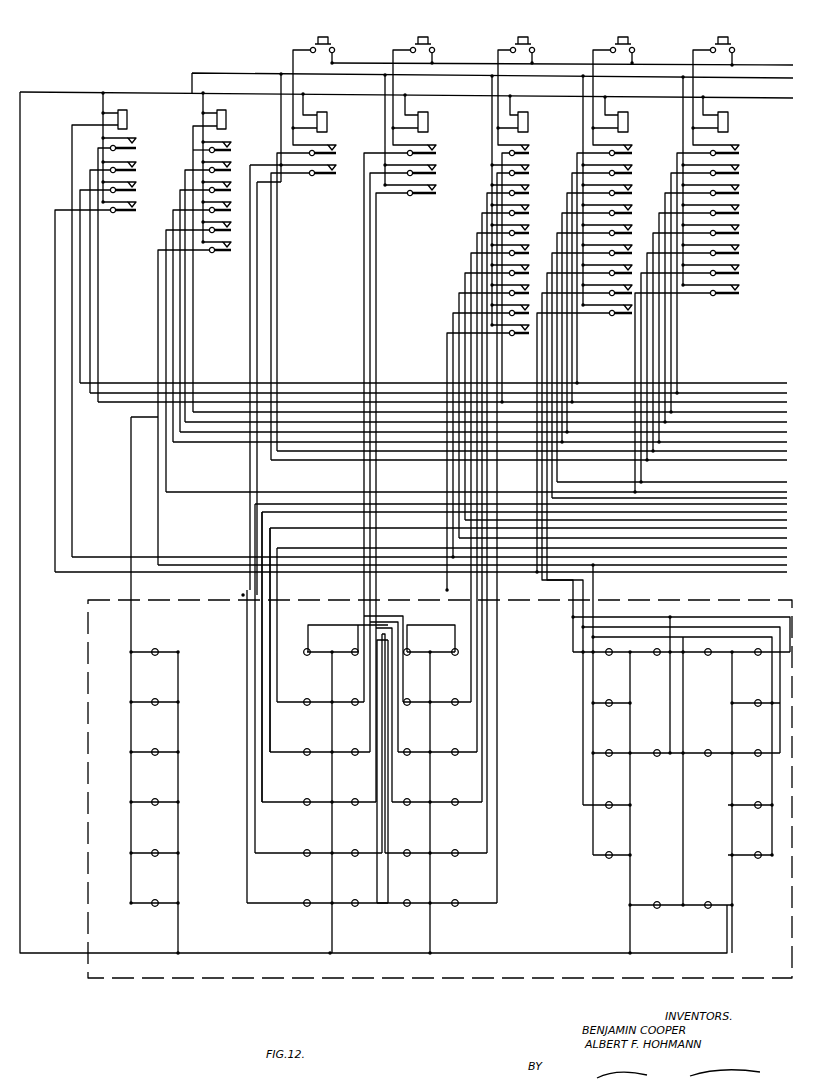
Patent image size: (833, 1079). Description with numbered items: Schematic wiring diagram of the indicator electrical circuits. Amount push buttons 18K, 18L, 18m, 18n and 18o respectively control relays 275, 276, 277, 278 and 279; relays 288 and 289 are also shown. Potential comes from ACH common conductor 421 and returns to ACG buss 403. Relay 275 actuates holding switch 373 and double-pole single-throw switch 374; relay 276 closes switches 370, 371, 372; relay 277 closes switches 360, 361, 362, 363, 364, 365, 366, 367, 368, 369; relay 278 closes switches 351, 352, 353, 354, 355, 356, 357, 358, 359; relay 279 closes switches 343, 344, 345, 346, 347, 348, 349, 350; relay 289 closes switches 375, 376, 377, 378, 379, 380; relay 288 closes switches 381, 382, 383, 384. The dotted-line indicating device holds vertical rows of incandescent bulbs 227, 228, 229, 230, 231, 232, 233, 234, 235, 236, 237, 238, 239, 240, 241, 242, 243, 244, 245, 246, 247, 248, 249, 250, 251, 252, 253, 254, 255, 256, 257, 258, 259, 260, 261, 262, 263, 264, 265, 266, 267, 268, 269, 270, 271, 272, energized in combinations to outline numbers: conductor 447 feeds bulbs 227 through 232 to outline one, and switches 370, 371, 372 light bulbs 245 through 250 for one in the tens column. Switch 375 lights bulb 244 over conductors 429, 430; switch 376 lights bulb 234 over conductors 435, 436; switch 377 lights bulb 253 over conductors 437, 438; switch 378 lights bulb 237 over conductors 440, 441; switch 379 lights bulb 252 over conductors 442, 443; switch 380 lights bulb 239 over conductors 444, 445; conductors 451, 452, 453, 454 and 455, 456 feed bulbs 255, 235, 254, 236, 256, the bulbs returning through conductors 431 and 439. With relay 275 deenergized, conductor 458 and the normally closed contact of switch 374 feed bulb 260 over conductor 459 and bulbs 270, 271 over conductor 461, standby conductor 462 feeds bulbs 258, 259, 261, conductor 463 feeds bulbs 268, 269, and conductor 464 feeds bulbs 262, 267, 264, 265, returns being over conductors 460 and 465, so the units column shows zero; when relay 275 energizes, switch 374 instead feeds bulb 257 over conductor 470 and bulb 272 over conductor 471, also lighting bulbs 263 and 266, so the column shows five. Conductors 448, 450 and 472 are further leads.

The amount push button 18K is at (319, 32).
The amount push button 18L is at (417, 31).
The amount push button 18m is at (517, 29).
The amount push button 18n is at (623, 30).
The amount push button 18o is at (725, 30).
The incandescent bulb 227 is at (162, 648).
The incandescent bulb 228 is at (156, 698).
The incandescent bulb 229 is at (156, 748).
The incandescent bulb 230 is at (156, 798).
The incandescent bulb 231 is at (156, 849).
The incandescent bulb 232 is at (156, 899).
The incandescent bulb 233 is at (319, 644).
The incandescent bulb 234 is at (318, 700).
The incandescent bulb 235 is at (308, 750).
The incandescent bulb 236 is at (308, 800).
The incandescent bulb 237 is at (305, 850).
The incandescent bulb 238 is at (305, 899).
The incandescent bulb 239 is at (355, 899).
The incandescent bulb 240 is at (355, 849).
The incandescent bulb 241 is at (355, 799).
The incandescent bulb 242 is at (355, 749).
The incandescent bulb 243 is at (355, 699).
The incandescent bulb 244 is at (347, 662).
The incandescent bulb 245 is at (413, 662).
The incandescent bulb 246 is at (413, 692).
The incandescent bulb 247 is at (410, 748).
The incandescent bulb 248 is at (408, 798).
The incandescent bulb 249 is at (408, 850).
The incandescent bulb 250 is at (412, 892).
The incandescent bulb 251 is at (456, 899).
The incandescent bulb 252 is at (456, 850).
The incandescent bulb 253 is at (456, 798).
The incandescent bulb 254 is at (455, 748).
The incandescent bulb 255 is at (455, 698).
The incandescent bulb 256 is at (456, 654).
The incandescent bulb 257 is at (618, 669).
The incandescent bulb 258 is at (609, 707).
The incandescent bulb 259 is at (609, 757).
The incandescent bulb 260 is at (609, 809).
The incandescent bulb 261 is at (609, 859).
The incandescent bulb 262 is at (662, 900).
The incandescent bulb 263 is at (657, 757).
The incandescent bulb 264 is at (648, 663).
The incandescent bulb 265 is at (708, 656).
The incandescent bulb 266 is at (716, 744).
The incandescent bulb 267 is at (708, 900).
The incandescent bulb 268 is at (758, 859).
The incandescent bulb 269 is at (749, 816).
The incandescent bulb 270 is at (758, 757).
The incandescent bulb 271 is at (749, 712).
The incandescent bulb 272 is at (749, 663).
The relay 275 is at (329, 118).
The relay 276 is at (429, 118).
The relay 277 is at (528, 120).
The relay 278 is at (628, 120).
The relay 279 is at (728, 120).
The relay 288 is at (128, 116).
The relay 289 is at (226, 118).
The normally open switch 343 is at (740, 145).
The normally open switch 344 is at (741, 168).
The normally open switch 345 is at (741, 189).
The normally open switch 346 is at (741, 209).
The normally open switch 347 is at (741, 229).
The normally open switch 348 is at (741, 248).
The normally open switch 349 is at (741, 268).
The normally open switch 350 is at (741, 288).
The normally open switch 351 is at (632, 145).
The normally open switch 352 is at (634, 164).
The normally open switch 353 is at (634, 184).
The normally open switch 354 is at (634, 204).
The normally open switch 355 is at (634, 224).
The normally open switch 356 is at (632, 244).
The normally open switch 357 is at (632, 265).
The normally open switch 358 is at (638, 296).
The normally open switch 359 is at (630, 316).
The normally open switch 360 is at (530, 143).
The normally open switch 361 is at (540, 161).
The normally open switch 362 is at (530, 184).
The normally open switch 363 is at (530, 204).
The normally open switch 364 is at (530, 225).
The normally open switch 365 is at (530, 246).
The normally open switch 366 is at (530, 268).
The normally open switch 367 is at (530, 288).
The normally open switch 368 is at (532, 312).
The normally open switch 369 is at (528, 330).
The normally open switch 370 is at (438, 149).
The normally open switch 371 is at (438, 168).
The normally open switch 372 is at (438, 189).
The normally open switch 373 is at (338, 149).
The double-pole single-throw switch 374 is at (338, 169).
The normally open switch 375 is at (240, 136).
The normally open switch 376 is at (242, 164).
The normally open switch 377 is at (246, 187).
The normally open switch 378 is at (246, 208).
The normally open switch 379 is at (246, 228).
The normally open switch 380 is at (246, 248).
The normally open switch 381 is at (138, 138).
The normally open switch 382 is at (140, 162).
The normally open switch 383 is at (136, 182).
The normally open switch 384 is at (138, 207).
The ACG buss 403 is at (220, 952).
The ACH common conductor 421 is at (268, 78).
The conductor 429 is at (194, 316).
The conductor 430 is at (350, 466).
The conductor 431 is at (328, 668).
The conductor 435 is at (177, 170).
The conductor 436 is at (297, 477).
The conductor 437 is at (156, 212).
The conductor 438 is at (501, 618).
The conductor 439 is at (467, 710).
The conductor 440 is at (154, 230).
The conductor 441 is at (246, 648).
The conductor 442 is at (142, 250).
The conductor 443 is at (501, 653).
The conductor 444 is at (146, 286).
The conductor 445 is at (408, 634).
The conductor 447 is at (136, 622).
The conductor 448 is at (180, 782).
The conductor 450 is at (410, 482).
The conductor 451 is at (470, 592).
The conductor 452 is at (276, 729).
The conductor 453 is at (471, 755).
The conductor 454 is at (268, 790).
The conductor 455 is at (750, 568).
The conductor 456 is at (384, 882).
The conductor 458 is at (279, 121).
The conductor 459 is at (242, 305).
The conductor 460 is at (632, 820).
The conductor 461 is at (652, 612).
The conductor 462 is at (572, 684).
The conductor 463 is at (710, 637).
The conductor 464 is at (684, 725).
The conductor 465 is at (730, 779).
The conductor 470 is at (242, 328).
The conductor 471 is at (714, 612).
The conductor 472 is at (668, 700).